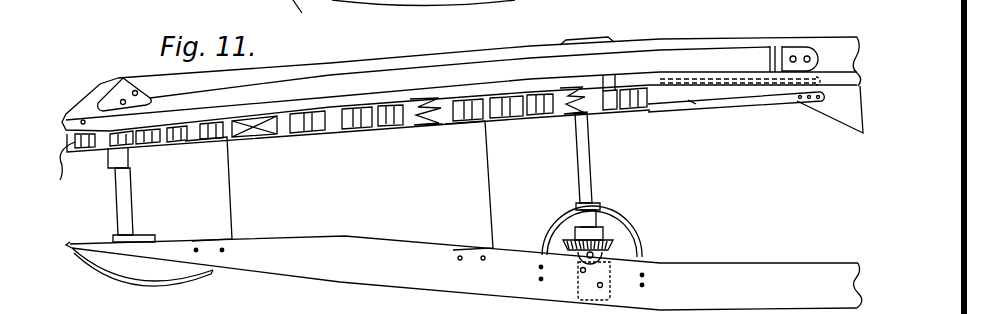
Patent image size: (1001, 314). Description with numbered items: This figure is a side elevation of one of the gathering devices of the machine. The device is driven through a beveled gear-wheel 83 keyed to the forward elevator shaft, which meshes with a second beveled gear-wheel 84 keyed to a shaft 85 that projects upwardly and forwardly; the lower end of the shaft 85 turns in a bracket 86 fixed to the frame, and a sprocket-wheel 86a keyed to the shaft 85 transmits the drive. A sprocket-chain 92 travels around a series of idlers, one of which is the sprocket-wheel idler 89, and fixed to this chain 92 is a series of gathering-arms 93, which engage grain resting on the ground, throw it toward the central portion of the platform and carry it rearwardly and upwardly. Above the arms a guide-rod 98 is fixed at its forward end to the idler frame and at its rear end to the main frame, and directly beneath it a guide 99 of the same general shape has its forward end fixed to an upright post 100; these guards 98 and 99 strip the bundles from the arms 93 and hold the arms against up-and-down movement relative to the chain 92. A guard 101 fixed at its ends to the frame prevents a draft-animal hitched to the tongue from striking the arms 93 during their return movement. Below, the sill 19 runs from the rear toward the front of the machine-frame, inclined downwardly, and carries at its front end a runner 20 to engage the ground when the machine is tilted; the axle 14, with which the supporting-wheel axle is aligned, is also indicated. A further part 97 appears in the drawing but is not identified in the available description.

The guard 101 is at (461, 84).
The guide-rod 98 is at (678, 84).
The guide 99 is at (735, 108).
The link 97 is at (351, 129).
The gathering-arms 93 is at (424, 131).
The sprocket-chain 92 is at (484, 108).
The sprocket-wheel 86a is at (548, 112).
The upright post 100 is at (129, 195).
The shaft 85 is at (590, 160).
The bracket 86 is at (550, 233).
The beveled gear-wheel 84 is at (610, 241).
The beveled gear-wheel 83 is at (611, 255).
The axle 14 is at (591, 256).
The sill 19 is at (464, 273).
The runner 20 is at (100, 270).
The sprocket-wheel idler 89 is at (73, 167).